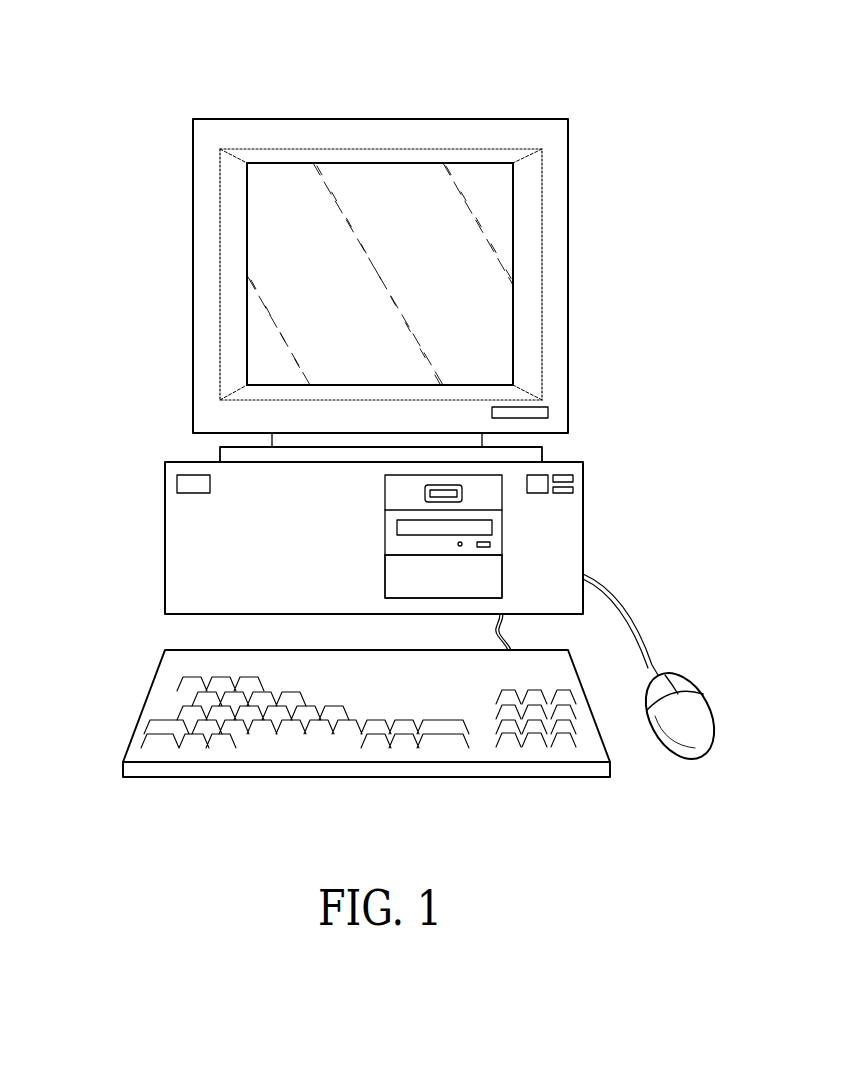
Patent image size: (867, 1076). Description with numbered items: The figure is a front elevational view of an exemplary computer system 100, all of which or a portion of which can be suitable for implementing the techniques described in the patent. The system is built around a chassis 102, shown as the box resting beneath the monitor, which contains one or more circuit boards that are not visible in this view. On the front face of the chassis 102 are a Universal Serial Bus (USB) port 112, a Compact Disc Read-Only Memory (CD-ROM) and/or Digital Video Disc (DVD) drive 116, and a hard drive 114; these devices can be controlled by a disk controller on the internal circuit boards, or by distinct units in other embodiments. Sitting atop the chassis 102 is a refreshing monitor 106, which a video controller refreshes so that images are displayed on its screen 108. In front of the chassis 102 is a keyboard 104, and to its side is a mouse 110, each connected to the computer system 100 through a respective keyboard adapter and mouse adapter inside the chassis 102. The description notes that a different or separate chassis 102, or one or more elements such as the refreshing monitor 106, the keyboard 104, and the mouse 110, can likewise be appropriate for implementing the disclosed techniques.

The computer system 100 is at (564, 91).
The chassis 102 is at (164, 542).
The keyboard 104 is at (146, 700).
The refreshing monitor 106 is at (268, 118).
The screen 108 is at (297, 280).
The mouse 110 is at (700, 705).
The Universal Serial Bus (USB) port 112 is at (462, 488).
The hard drive 114 is at (492, 575).
The Compact Disc Read-Only Memory (CD-ROM) and/or Digital Video Disc (DVD) drive 116 is at (492, 535).